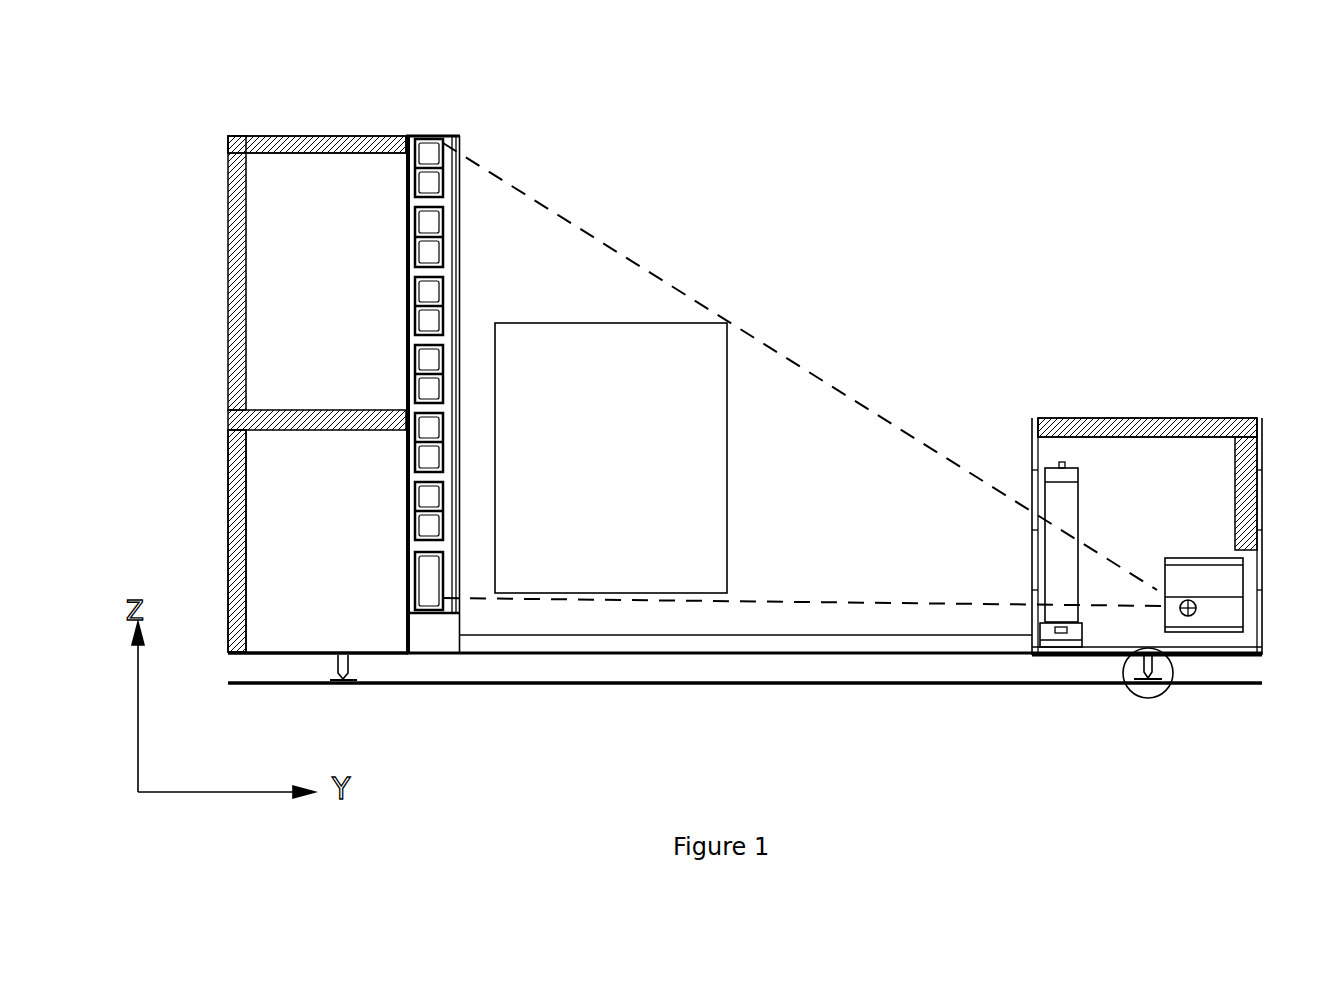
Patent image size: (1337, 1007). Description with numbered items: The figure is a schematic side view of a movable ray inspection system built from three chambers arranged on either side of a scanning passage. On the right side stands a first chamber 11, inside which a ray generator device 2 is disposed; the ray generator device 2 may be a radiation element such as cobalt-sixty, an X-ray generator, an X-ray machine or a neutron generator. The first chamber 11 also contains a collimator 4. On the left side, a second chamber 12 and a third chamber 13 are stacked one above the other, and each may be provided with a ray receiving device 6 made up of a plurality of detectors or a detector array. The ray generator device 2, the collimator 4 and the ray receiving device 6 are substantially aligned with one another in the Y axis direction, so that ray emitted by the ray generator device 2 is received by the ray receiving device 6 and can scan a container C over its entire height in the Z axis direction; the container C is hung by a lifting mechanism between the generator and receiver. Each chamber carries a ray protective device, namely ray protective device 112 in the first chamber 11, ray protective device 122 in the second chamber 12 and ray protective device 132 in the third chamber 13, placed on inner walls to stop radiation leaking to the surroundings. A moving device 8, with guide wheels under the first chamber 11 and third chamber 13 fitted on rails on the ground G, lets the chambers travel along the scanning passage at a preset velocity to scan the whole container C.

The second chamber 12 is at (205, 223).
The ray protective device 122 is at (277, 138).
The ray receiving device 6 is at (433, 183).
The third chamber 13 is at (208, 540).
The ray protective device 132 is at (228, 575).
The first chamber 11 is at (1098, 403).
The ray protective device 112 is at (1210, 418).
The collimator 4 is at (1058, 490).
The ray generator device 2 is at (1232, 578).
The moving device 8 is at (333, 676).
The container C is at (670, 358).
The ground G is at (428, 685).